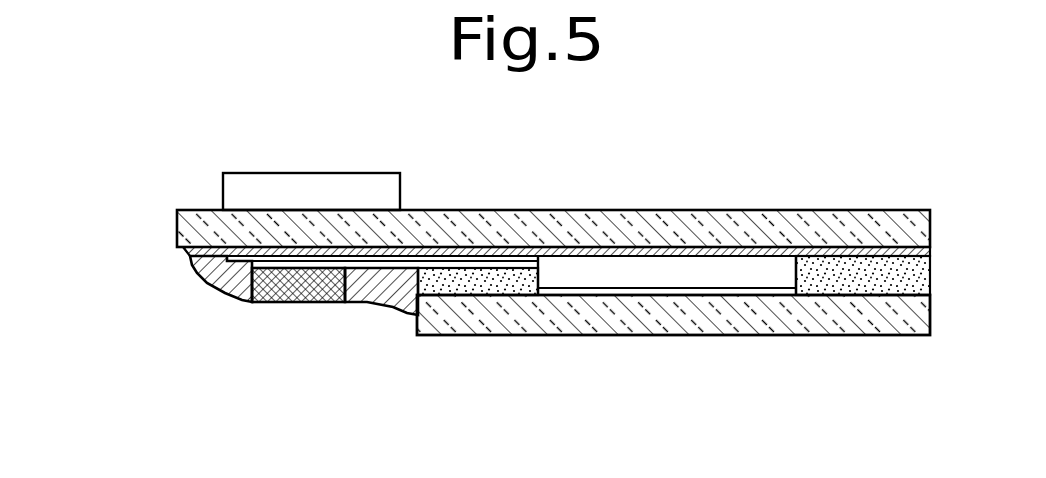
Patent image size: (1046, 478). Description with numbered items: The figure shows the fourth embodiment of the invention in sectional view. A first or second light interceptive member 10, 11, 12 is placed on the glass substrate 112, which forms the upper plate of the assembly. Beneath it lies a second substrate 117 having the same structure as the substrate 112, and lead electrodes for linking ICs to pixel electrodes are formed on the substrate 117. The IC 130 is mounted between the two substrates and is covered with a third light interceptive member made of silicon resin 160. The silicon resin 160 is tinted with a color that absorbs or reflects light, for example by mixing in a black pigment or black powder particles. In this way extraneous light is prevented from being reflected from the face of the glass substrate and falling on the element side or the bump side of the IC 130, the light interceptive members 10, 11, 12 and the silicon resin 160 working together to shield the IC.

The first light interceptive member 10 is at (237, 186).
The second light interceptive member 11 is at (237, 186).
The light interceptive member 12 is at (223, 193).
The glass substrate 112 is at (914, 240).
The substrate 117 is at (477, 317).
The IC 130 is at (267, 303).
The silicon resin 160 is at (372, 303).